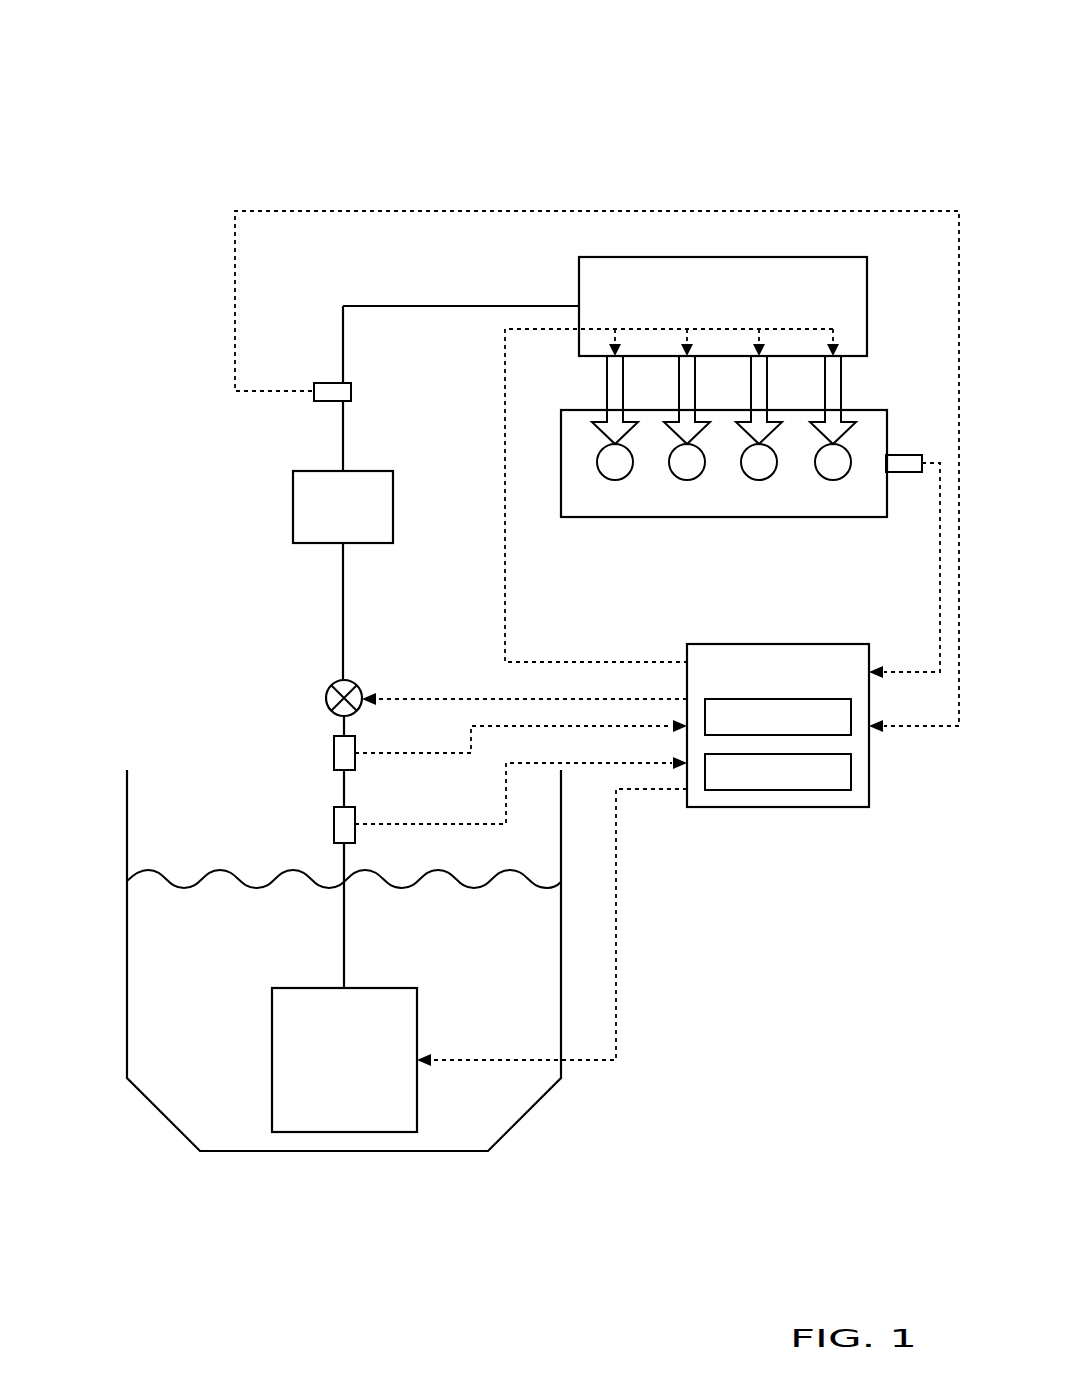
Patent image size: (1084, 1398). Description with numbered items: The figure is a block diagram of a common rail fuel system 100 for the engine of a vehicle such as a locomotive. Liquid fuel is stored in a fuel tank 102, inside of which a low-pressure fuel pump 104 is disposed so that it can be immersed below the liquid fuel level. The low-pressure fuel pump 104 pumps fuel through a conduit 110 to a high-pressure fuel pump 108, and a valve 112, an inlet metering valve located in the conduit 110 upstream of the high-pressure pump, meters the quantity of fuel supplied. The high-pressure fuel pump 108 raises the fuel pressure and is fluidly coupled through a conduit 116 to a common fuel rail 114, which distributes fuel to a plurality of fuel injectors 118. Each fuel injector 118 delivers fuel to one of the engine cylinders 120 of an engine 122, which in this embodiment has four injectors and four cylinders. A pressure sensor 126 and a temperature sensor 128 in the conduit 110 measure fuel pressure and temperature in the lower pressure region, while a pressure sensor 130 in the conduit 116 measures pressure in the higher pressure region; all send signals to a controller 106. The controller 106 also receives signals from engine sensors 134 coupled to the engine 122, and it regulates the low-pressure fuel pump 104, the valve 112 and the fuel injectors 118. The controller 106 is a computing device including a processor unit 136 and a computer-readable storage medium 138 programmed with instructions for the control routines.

The common rail fuel system 100 is at (783, 60).
The fuel tank 102 is at (127, 815).
The low-pressure fuel pump 104 is at (360, 1073).
The controller 106 is at (794, 682).
The high-pressure fuel pump 108 is at (360, 520).
The conduit 110 is at (345, 947).
The valve 112 is at (327, 692).
The common fuel rail 114 is at (739, 319).
The conduit 116 is at (565, 306).
The fuel injectors 118 is at (825, 396).
The engine cylinders 120 is at (610, 480).
The engine 122 is at (722, 517).
The pressure sensor 126 is at (353, 807).
The temperature sensor 128 is at (353, 736).
The pressure sensor 130 is at (330, 383).
The engine sensors 134 is at (890, 455).
The processor unit 136 is at (794, 730).
The computer-readable storage medium 138 is at (794, 785).